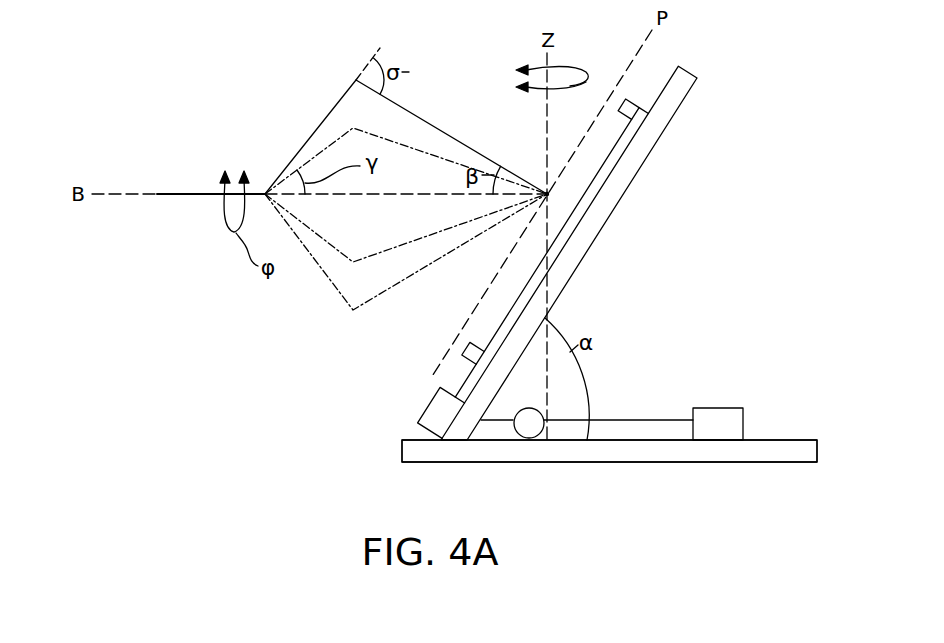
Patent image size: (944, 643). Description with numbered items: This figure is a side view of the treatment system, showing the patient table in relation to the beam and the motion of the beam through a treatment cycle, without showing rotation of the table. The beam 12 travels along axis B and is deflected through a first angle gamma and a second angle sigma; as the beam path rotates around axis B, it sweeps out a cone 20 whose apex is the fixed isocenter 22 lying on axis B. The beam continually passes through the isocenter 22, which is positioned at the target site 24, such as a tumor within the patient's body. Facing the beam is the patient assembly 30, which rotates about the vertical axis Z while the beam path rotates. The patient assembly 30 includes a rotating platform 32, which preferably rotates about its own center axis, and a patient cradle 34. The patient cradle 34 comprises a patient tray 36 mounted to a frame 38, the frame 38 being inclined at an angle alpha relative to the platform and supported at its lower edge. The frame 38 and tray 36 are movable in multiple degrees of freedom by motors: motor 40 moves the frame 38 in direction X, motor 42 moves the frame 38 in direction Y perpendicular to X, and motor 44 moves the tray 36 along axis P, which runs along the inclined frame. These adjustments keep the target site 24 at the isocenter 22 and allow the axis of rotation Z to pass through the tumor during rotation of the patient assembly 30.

The beam 12 is at (197, 197).
The cone 20 is at (337, 287).
The isocenter 22 is at (547, 195).
The target site 24 is at (547, 194).
The patient assembly 30 is at (413, 450).
The rotating platform 32 is at (792, 450).
The patient cradle 34 is at (630, 418).
The patient tray 36 is at (632, 108).
The frame 38 is at (633, 162).
The motor 40 is at (527, 428).
The motor 42 is at (720, 421).
The motor 44 is at (440, 412).